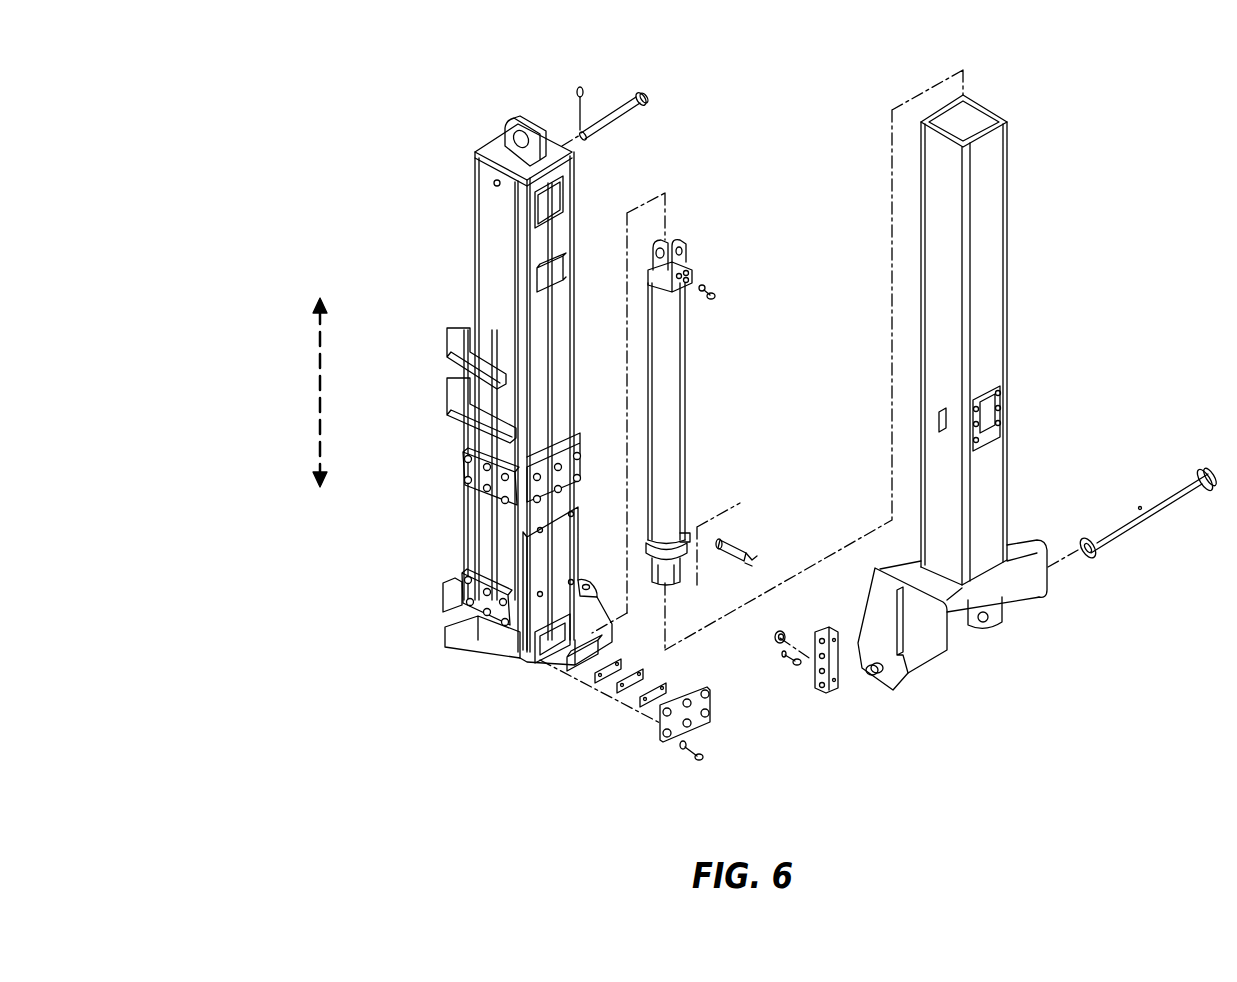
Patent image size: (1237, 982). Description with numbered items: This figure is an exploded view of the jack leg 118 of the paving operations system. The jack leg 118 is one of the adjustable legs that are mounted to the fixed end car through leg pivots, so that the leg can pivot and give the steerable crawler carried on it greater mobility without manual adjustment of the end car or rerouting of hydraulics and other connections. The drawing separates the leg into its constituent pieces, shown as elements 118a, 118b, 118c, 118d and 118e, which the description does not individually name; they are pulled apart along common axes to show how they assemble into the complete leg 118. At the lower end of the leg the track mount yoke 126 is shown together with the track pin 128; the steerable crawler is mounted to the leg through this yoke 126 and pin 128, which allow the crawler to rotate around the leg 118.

The jack leg 118 is at (242, 154).
The outer column 118a is at (1000, 362).
The inner column 118b is at (483, 278).
The hydraulic cylinder 118c is at (665, 432).
The direction of extension 118d is at (320, 408).
The attachment ear 118e is at (583, 585).
The track mount yoke 126 is at (925, 632).
The track pin 128 is at (1157, 503).